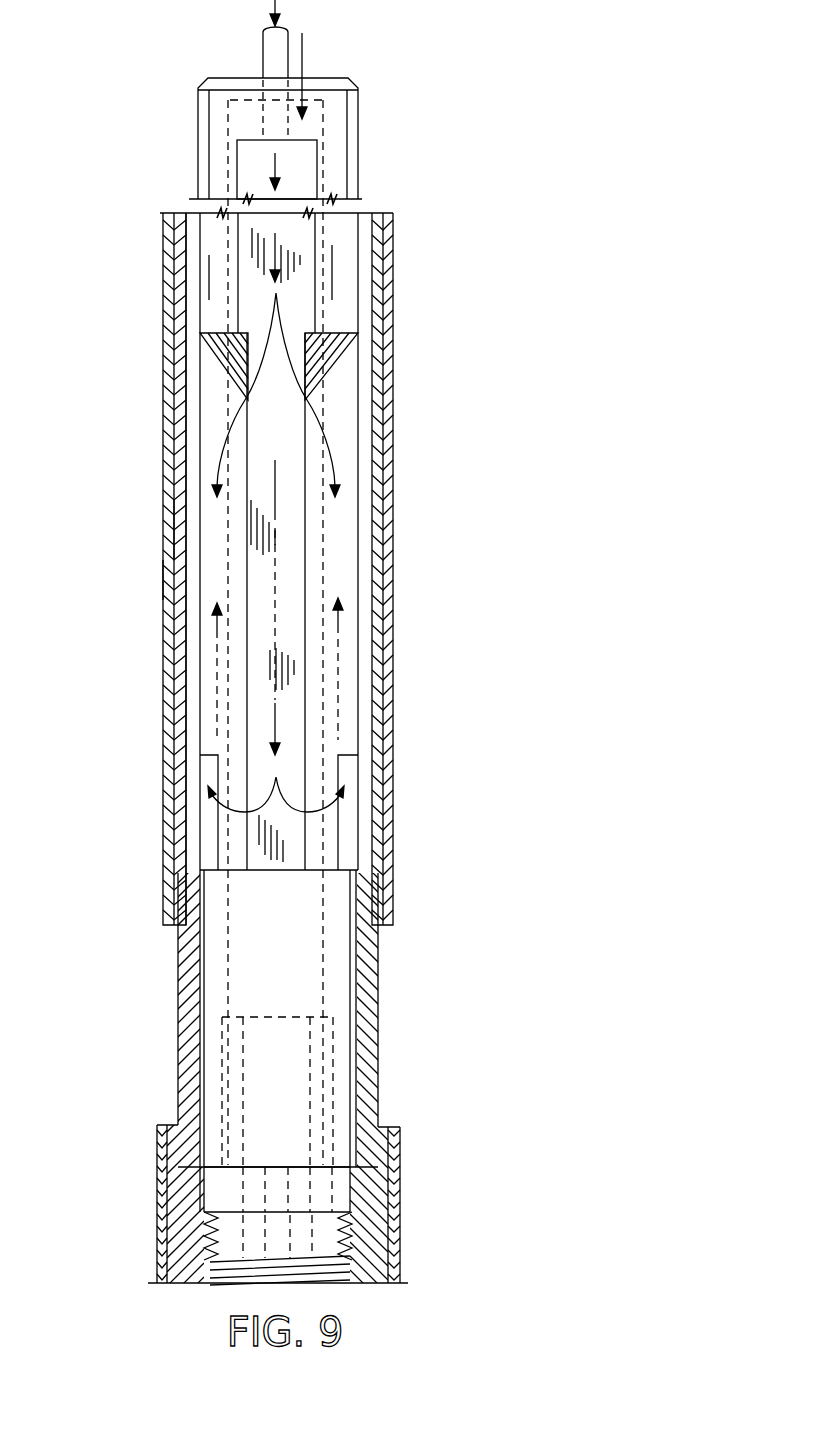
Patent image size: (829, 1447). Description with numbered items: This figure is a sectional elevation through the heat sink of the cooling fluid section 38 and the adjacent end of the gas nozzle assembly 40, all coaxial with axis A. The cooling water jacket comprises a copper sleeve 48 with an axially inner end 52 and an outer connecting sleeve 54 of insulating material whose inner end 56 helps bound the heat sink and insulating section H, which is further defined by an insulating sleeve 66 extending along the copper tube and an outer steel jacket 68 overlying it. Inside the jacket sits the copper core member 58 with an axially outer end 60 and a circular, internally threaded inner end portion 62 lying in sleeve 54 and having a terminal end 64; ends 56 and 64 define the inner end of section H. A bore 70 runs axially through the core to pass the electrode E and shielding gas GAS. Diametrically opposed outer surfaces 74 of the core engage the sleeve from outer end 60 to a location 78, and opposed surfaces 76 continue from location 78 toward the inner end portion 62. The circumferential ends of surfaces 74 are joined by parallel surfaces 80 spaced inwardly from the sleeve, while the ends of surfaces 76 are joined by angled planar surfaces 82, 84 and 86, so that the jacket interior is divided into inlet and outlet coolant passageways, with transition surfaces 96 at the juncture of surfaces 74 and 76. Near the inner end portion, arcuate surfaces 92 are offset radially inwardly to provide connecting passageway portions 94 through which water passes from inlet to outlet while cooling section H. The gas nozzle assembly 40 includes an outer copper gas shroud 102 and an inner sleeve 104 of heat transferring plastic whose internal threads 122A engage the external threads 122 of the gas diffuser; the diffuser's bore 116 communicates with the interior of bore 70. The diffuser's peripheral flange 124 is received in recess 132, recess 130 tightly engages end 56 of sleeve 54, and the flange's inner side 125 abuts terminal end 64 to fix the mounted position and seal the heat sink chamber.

The cooling fluid section 38 is at (71, 177).
The gas nozzle assembly 40 is at (110, 1160).
The copper sleeve 48 is at (193, 522).
The axially inner end of sleeve 48 52 is at (190, 887).
The outer connecting sleeve 54 is at (187, 990).
The inner end of connecting sleeve 54 56 is at (185, 1138).
The copper core member 58 is at (362, 109).
The axially outer end of core member 60 is at (352, 133).
The axially inner end portion of core member 62 is at (223, 930).
The terminal end of end portion 62 64 is at (377, 1152).
The insulating sleeve 66 is at (182, 552).
The outer steel jacket 68 is at (168, 583).
The bore 70 is at (230, 130).
The first pair of outer surfaces 74 is at (198, 180).
The second pair of outer surfaces 76 is at (200, 393).
The intermediate location 78 is at (332, 325).
The parallel surfaces 80 is at (300, 163).
The planar surface 82 is at (335, 417).
The planar surface 84 is at (288, 403).
The planar surface 86 is at (208, 452).
The arcuate surfaces 92 is at (210, 812).
The connecting passageway portions 94 is at (192, 853).
The transition surfaces 96 is at (210, 348).
The gas shroud 102 is at (397, 1257).
The inner sleeve 104 is at (205, 1247).
The bore of gas diffuser 116 is at (308, 1040).
The external threads 122 is at (340, 1263).
The internal threads 122A is at (205, 1226).
The peripheral flange 124 is at (220, 1188).
The axially inner side of flange 125 is at (253, 1163).
The recess 130 is at (373, 1152).
The recess 132 is at (345, 1192).
The electrode E is at (265, 48).
The shielding gas GAS is at (327, 71).
The axis A is at (275, 572).
The heat sink and insulating section H is at (150, 1038).